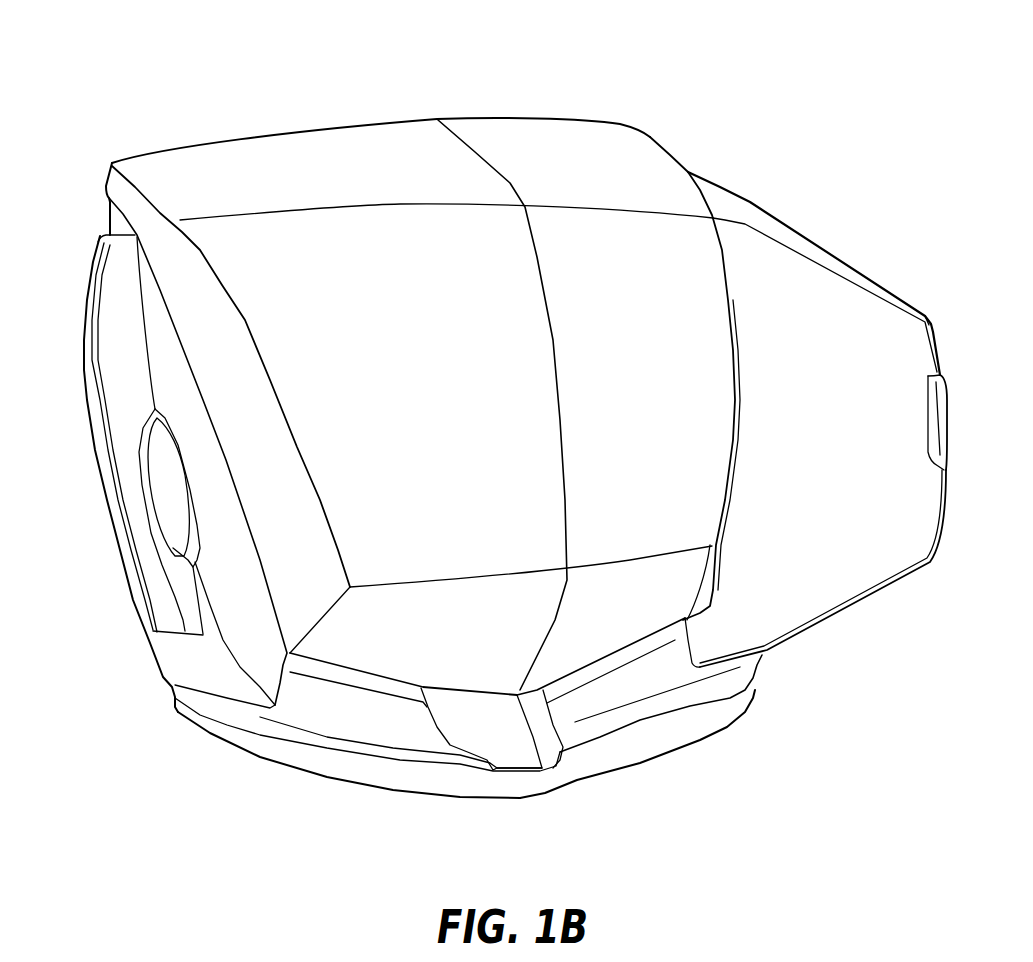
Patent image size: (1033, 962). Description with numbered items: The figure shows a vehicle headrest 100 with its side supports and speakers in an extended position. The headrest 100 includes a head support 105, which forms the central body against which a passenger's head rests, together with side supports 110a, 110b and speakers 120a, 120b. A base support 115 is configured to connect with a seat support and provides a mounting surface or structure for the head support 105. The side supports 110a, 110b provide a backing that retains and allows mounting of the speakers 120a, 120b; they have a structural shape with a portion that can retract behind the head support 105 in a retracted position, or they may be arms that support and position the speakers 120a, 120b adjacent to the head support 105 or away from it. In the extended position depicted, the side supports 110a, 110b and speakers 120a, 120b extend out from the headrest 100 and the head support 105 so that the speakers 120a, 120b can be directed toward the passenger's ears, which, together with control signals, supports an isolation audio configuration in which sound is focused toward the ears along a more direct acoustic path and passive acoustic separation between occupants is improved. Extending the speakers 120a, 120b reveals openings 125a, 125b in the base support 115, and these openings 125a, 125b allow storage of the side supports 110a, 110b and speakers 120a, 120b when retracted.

The headrest 100 is at (143, 78).
The head support 105 is at (562, 147).
The side support 110a is at (115, 378).
The side support 110b is at (823, 258).
The base support 115 is at (513, 750).
The speaker 120a is at (248, 645).
The speaker 120b is at (828, 573).
The opening 125a is at (347, 700).
The opening 125b is at (636, 678).